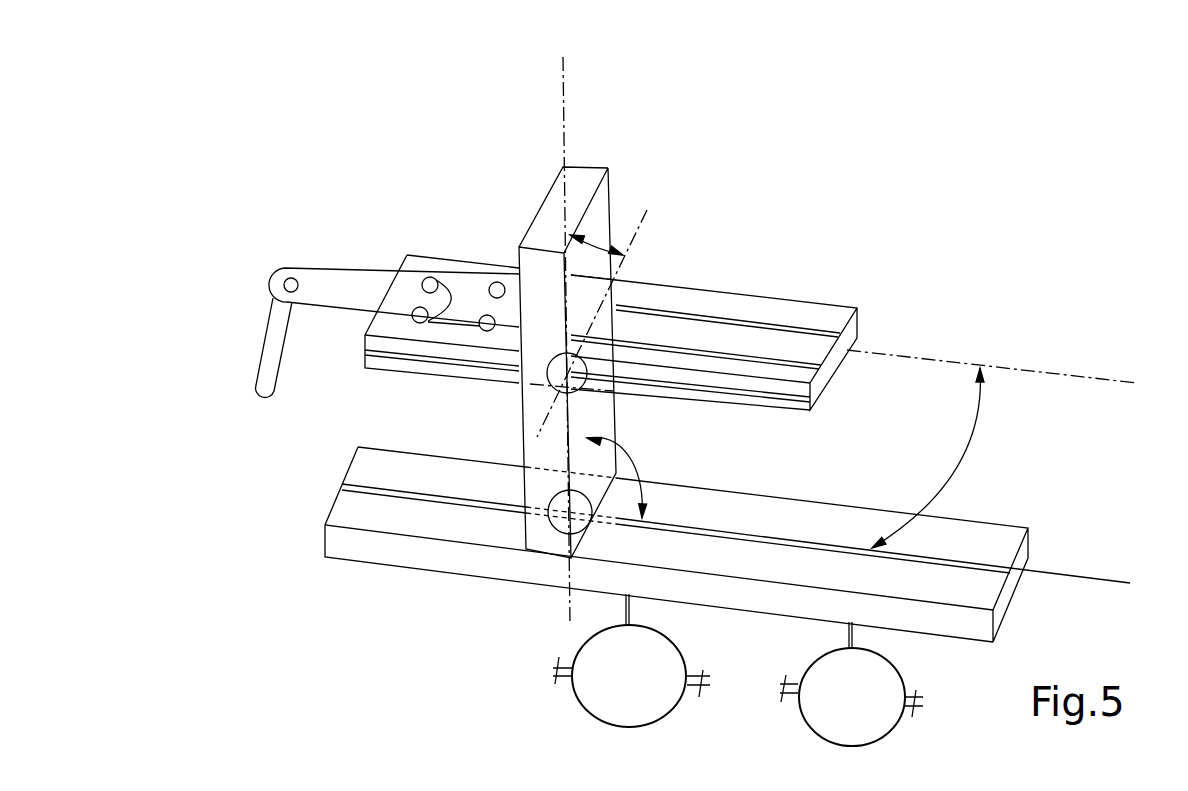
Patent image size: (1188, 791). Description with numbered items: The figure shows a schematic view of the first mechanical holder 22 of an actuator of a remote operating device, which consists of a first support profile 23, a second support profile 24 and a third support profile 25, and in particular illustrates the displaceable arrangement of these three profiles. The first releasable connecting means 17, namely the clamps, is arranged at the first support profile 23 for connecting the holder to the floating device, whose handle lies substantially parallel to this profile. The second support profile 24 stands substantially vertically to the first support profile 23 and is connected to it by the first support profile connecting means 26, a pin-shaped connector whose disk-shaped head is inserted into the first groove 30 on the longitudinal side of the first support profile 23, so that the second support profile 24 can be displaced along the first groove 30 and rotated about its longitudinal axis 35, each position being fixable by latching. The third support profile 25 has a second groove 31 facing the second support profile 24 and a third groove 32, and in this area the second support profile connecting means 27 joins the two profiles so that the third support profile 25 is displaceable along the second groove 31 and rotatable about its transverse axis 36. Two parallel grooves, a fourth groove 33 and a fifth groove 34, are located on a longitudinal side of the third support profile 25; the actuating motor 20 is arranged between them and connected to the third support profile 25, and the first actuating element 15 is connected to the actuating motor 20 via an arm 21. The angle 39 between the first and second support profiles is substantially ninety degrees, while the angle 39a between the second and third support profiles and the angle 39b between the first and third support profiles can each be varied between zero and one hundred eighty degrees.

The first actuating element 15 is at (270, 360).
The first releasable connecting means 17 is at (798, 717).
The actuating motor 20 is at (470, 303).
The arm 21 is at (330, 283).
The first mechanical holder 22 is at (873, 217).
The first support profile 23 is at (972, 538).
The second support profile 24 is at (600, 223).
The third support profile 25 is at (828, 318).
The first support profile connecting means 26 is at (548, 517).
The second support profile connecting means 27 is at (557, 384).
The first groove 30 is at (397, 493).
The second groove 31 is at (582, 187).
The third groove 32 is at (810, 410).
The fourth groove 33 is at (728, 310).
The fifth groove 34 is at (737, 338).
The longitudinal axis 35 is at (562, 113).
The transverse axis 36 is at (632, 241).
The angle 39 is at (632, 463).
The angle 39a is at (626, 245).
The angle 39b is at (963, 463).